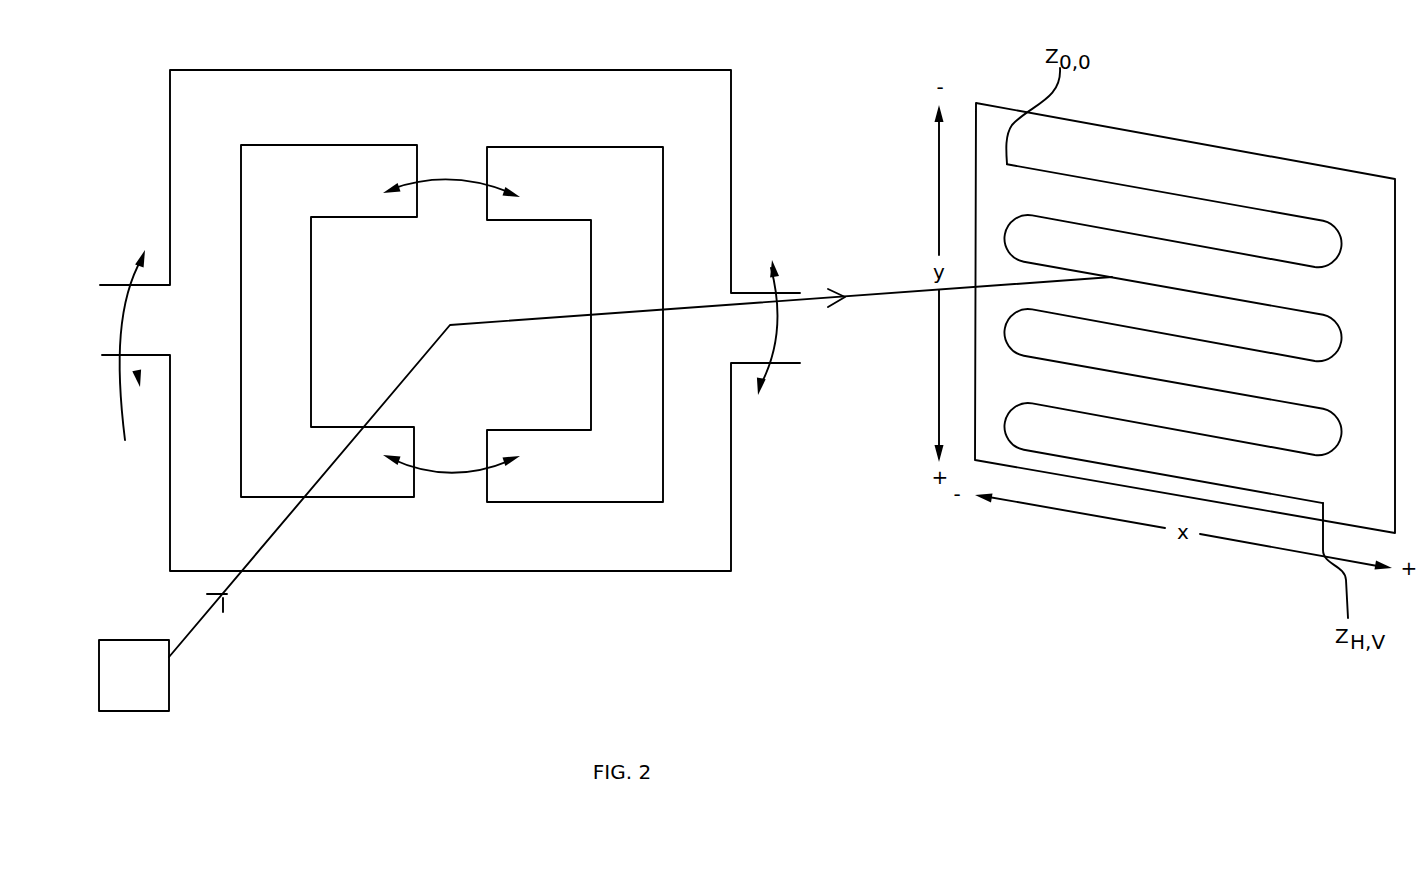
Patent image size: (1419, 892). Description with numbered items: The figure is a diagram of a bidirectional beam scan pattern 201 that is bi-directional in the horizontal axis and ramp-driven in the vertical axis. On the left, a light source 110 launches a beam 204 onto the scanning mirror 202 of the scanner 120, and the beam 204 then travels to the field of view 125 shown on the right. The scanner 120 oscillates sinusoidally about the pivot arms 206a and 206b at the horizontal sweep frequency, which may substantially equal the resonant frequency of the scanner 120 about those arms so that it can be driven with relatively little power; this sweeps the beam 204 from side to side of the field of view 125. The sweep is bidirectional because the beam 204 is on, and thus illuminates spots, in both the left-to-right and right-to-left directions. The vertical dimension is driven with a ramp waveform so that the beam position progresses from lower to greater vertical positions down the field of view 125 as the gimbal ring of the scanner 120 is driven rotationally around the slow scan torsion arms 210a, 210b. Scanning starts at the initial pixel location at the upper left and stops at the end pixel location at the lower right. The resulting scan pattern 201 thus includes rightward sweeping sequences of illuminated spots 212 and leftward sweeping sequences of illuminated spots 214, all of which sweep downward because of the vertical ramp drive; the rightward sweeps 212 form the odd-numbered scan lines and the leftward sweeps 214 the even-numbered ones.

The light source 110 is at (169, 678).
The scanner 120 is at (483, 616).
The field of view 125 is at (1220, 505).
The scan pattern 201 is at (1200, 110).
The scanning mirror 202 is at (590, 363).
The beam 204 is at (888, 293).
The pivot arm 206a is at (488, 160).
The pivot arm 206b is at (418, 493).
The slow scan torsion arm 210a is at (135, 360).
The slow scan torsion arm 210b is at (780, 363).
The rightward sweeping sequence of illuminated spots 212 is at (1185, 197).
The leftward sweeping sequence of illuminated spots 214 is at (1252, 255).